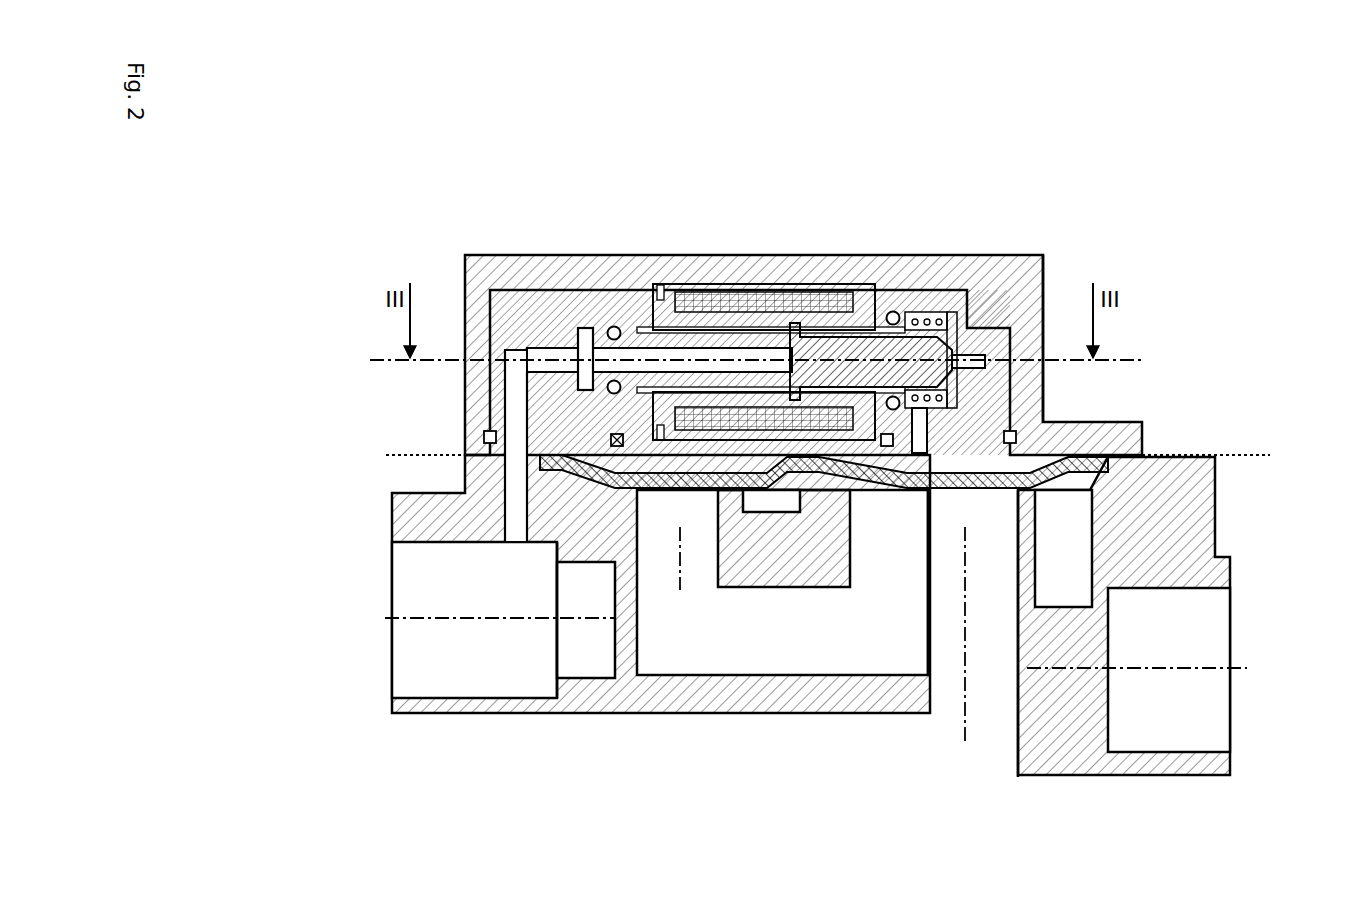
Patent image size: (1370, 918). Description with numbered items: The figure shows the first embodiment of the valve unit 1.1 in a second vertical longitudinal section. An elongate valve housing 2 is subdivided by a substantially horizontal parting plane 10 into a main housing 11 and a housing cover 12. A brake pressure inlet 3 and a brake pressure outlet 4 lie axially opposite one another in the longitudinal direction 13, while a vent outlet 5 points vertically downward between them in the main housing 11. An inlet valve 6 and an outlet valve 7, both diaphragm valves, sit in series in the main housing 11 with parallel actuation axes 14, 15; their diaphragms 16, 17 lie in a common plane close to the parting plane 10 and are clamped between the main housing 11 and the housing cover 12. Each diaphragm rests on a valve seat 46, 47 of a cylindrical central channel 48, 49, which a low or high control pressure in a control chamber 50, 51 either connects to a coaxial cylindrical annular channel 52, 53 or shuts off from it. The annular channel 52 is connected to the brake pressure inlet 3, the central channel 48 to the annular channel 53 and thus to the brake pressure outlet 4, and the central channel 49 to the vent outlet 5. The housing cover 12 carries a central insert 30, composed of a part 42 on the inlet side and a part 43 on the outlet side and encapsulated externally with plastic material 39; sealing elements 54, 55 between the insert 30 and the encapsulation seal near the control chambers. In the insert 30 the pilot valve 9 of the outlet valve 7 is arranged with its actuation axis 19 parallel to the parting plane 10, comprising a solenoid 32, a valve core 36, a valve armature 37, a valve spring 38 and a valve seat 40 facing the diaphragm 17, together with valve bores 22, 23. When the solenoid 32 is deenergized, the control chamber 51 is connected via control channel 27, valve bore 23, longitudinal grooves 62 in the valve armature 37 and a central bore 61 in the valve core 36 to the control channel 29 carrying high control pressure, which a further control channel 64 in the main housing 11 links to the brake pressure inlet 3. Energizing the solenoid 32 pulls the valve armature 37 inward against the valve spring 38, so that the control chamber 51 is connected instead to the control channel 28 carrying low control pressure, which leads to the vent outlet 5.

The valve unit 1.1 is at (314, 205).
The valve housing 2 is at (767, 484).
The housing cover 12 is at (1020, 295).
The main housing 11 is at (605, 690).
The brake pressure inlet 3 is at (470, 667).
The brake pressure outlet 4 is at (1170, 703).
The vent outlet 5 is at (994, 653).
The inlet valve 6 is at (680, 613).
The outlet valve 7 is at (963, 613).
The pilot valve 9 is at (762, 238).
The parting plane 10 is at (378, 455).
The longitudinal direction 13 is at (735, 755).
The actuation axis 14 is at (690, 583).
The actuation axis 15 is at (960, 575).
The diaphragm 16 is at (587, 527).
The diaphragm 17 is at (1057, 485).
The actuation axis 19 is at (680, 355).
The valve bore 22 is at (587, 343).
The valve bore 23 is at (938, 325).
The control channel 27 is at (920, 430).
The control channel 28 is at (978, 355).
The control channel 29 is at (515, 392).
The central insert 30 is at (556, 237).
The solenoid 32 is at (800, 302).
The valve core 36 is at (645, 337).
The valve armature 37 is at (862, 348).
The valve spring 38 is at (914, 308).
The plastic material 39 is at (1025, 297).
The valve seat 40 is at (965, 300).
The part on the inlet side 42 is at (540, 312).
The part on the outlet side 43 is at (975, 393).
The valve seat 46 is at (548, 570).
The valve seat 47 is at (1023, 503).
The central channel 48 is at (668, 529).
The central channel 49 is at (956, 529).
The control chamber 50 is at (613, 468).
The control chamber 51 is at (1023, 467).
The cylindrical annular channel 52 is at (627, 505).
The cylindrical annular channel 53 is at (1062, 510).
The sealing element 54 is at (487, 435).
The sealing element 55 is at (613, 440).
The central bore 61 is at (707, 353).
The longitudinal grooves 62 is at (830, 337).
The further control channel 64 is at (513, 473).